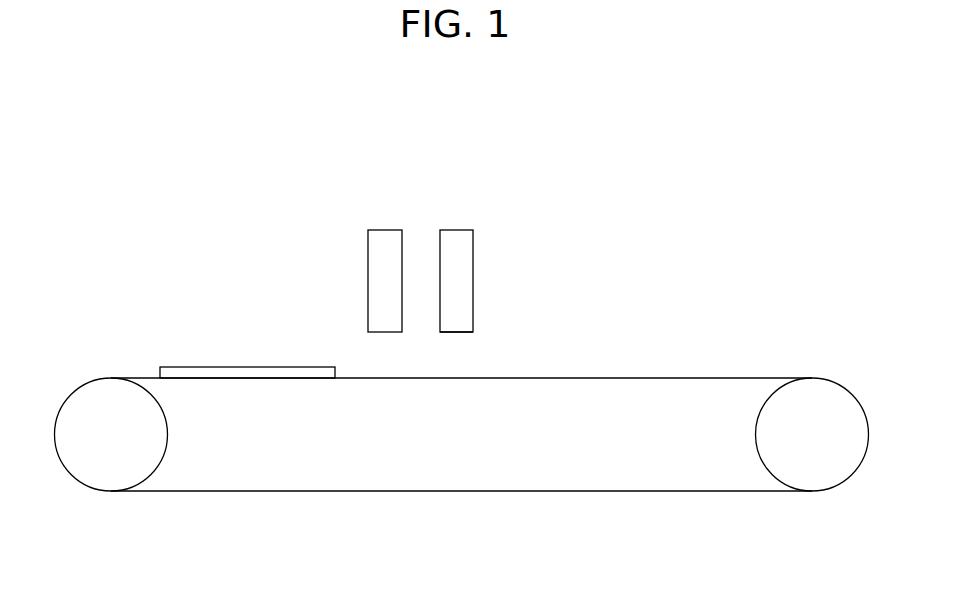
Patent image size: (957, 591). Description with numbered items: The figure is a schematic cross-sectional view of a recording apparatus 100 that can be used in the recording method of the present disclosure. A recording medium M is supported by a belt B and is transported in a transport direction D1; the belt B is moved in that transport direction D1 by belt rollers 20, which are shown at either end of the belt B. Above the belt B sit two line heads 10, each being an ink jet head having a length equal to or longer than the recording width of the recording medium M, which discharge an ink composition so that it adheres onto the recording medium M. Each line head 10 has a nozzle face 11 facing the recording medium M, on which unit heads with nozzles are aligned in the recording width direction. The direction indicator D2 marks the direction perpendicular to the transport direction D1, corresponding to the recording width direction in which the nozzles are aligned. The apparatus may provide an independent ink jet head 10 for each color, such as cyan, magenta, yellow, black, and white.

The recording apparatus 100 is at (106, 187).
The line head 10 is at (385, 230).
The nozzle face 11 is at (465, 340).
The belt roller 20 is at (168, 440).
The belt B is at (747, 378).
The recording medium M is at (240, 367).
The transport direction D1 is at (300, 402).
The width direction D2 is at (678, 130).